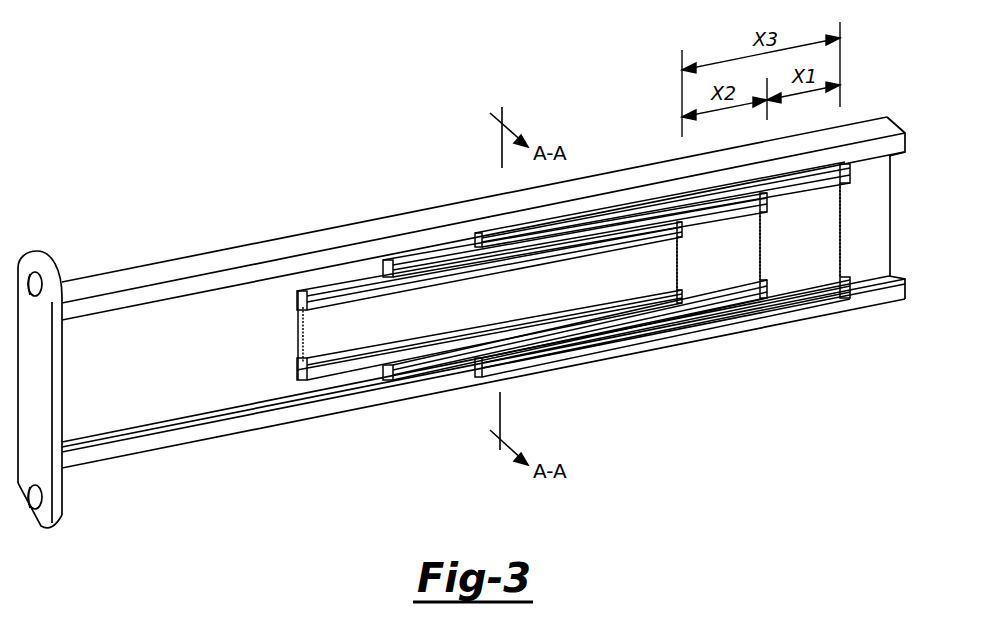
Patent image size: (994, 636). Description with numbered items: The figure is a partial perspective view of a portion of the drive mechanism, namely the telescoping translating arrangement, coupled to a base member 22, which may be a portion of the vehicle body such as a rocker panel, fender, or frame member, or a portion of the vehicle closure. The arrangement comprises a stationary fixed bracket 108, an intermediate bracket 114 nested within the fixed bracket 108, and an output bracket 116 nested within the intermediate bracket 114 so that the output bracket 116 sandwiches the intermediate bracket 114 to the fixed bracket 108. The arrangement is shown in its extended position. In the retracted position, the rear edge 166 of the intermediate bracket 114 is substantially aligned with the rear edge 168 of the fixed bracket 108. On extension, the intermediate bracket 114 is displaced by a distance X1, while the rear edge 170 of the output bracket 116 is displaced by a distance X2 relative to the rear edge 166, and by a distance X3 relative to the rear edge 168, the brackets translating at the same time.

The base member 22 is at (291, 248).
The fixed bracket 108 is at (813, 220).
The intermediate bracket 114 is at (711, 245).
The output bracket 116 is at (553, 291).
The rear edge of the intermediate bracket 166 is at (770, 245).
The rear edge of the fixed bracket 168 is at (842, 238).
The rear edge of the output bracket 170 is at (680, 263).